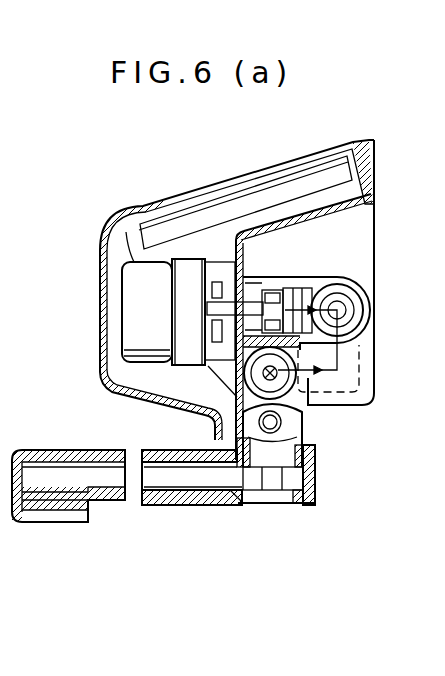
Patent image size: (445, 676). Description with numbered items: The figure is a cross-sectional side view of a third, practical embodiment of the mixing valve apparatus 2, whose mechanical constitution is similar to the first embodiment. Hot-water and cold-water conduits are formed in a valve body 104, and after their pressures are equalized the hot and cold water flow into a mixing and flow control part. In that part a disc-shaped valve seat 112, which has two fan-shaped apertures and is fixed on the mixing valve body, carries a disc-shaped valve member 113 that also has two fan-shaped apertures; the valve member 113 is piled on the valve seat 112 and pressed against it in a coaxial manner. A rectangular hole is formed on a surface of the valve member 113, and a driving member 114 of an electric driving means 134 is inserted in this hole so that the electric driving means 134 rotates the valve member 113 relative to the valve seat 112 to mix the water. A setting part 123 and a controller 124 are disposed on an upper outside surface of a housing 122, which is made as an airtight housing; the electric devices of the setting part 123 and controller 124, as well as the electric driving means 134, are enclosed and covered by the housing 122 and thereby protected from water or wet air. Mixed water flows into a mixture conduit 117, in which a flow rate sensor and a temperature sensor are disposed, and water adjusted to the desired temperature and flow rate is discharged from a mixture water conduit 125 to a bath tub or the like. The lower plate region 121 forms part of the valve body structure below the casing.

The device 2 is at (8, 195).
The valve body 104 is at (374, 255).
The valve seat 112 is at (313, 282).
The valve member 113 is at (292, 280).
The driving member 114 is at (270, 279).
The mixture conduit 117 is at (316, 484).
The bottom plate 121 is at (345, 408).
The housing 122 is at (100, 296).
The setting part 123 is at (197, 190).
The controller 124 is at (212, 198).
The mixture water conduit 125 is at (78, 446).
The electric driving means 134 is at (126, 232).